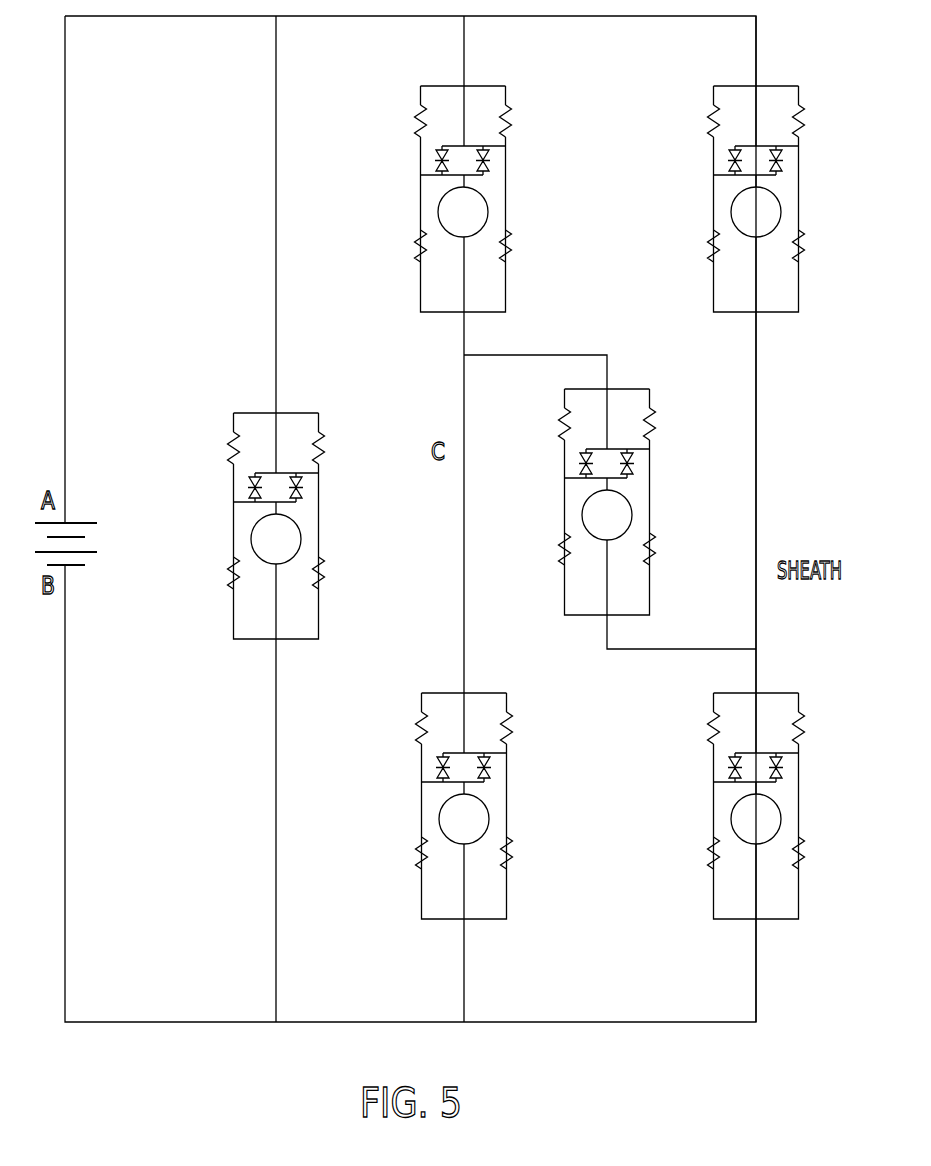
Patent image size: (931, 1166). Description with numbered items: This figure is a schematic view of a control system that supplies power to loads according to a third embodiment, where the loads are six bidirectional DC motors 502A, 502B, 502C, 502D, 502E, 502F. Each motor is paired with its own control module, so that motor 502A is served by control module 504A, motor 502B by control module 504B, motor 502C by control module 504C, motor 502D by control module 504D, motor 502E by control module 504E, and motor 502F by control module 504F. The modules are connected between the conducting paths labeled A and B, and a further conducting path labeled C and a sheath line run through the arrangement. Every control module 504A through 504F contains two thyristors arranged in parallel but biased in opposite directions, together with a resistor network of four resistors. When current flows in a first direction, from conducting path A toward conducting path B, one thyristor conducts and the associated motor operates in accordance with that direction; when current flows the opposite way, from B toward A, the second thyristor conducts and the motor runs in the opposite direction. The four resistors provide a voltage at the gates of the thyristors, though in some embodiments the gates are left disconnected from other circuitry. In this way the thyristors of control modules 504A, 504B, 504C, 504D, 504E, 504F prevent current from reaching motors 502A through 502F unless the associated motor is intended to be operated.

The bidirectional DC motor 502A is at (311, 539).
The bidirectional DC motor 502B is at (498, 212).
The bidirectional DC motor 502C is at (499, 819).
The bidirectional DC motor 502D is at (642, 515).
The bidirectional DC motor 502E is at (791, 212).
The bidirectional DC motor 502F is at (791, 819).
The control module 504A is at (245, 508).
The control module 504B is at (432, 181).
The control module 504C is at (433, 788).
The control module 504D is at (584, 487).
The control module 504E is at (725, 181).
The control module 504F is at (725, 788).